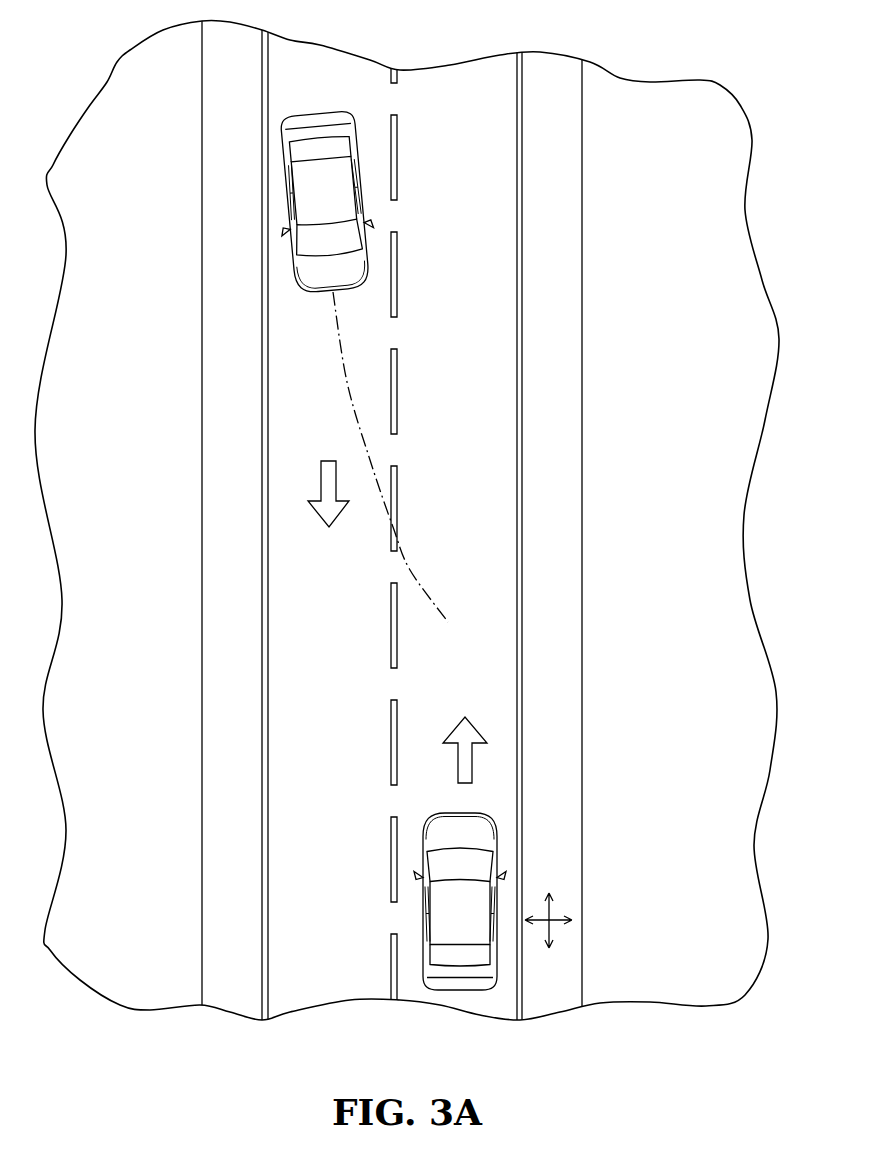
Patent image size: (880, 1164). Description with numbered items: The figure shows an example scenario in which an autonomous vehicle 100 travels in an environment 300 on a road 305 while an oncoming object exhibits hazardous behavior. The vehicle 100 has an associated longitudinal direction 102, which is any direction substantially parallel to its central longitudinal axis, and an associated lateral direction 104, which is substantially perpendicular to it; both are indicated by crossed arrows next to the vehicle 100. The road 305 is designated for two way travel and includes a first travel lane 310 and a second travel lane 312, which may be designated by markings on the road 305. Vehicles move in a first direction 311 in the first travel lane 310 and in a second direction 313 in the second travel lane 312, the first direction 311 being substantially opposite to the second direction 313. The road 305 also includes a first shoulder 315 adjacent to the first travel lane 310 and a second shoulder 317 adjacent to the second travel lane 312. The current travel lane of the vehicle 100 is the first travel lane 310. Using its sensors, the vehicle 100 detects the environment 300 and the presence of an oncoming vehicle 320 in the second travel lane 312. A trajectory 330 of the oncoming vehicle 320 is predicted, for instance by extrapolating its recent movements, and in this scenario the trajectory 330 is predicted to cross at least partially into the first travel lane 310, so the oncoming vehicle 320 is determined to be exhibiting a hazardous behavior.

The vehicle 100 is at (497, 850).
The longitudinal direction 102 is at (548, 932).
The lateral direction 104 is at (552, 918).
The environment 300 is at (600, 220).
The road 305 is at (448, 86).
The first travel lane 310 is at (488, 1003).
The first direction 311 is at (473, 760).
The second travel lane 312 is at (287, 990).
The second direction 313 is at (320, 480).
The first shoulder 315 is at (565, 1003).
The second shoulder 317 is at (236, 990).
The oncoming vehicle 320 is at (290, 261).
The trajectory 330 is at (347, 382).